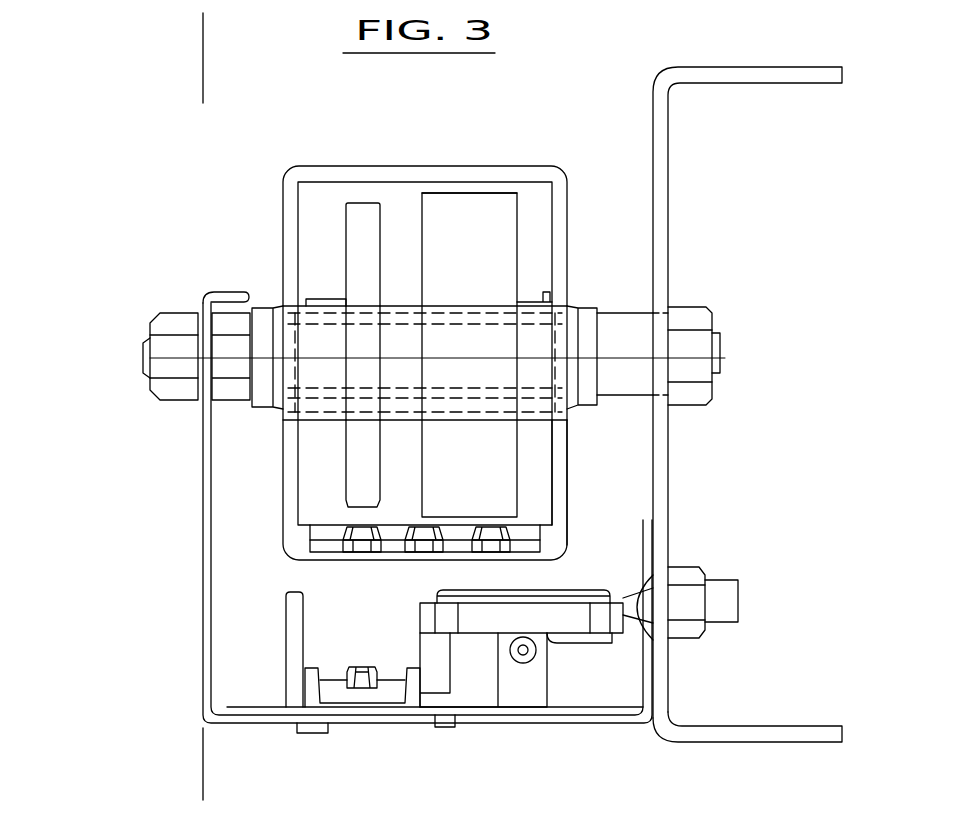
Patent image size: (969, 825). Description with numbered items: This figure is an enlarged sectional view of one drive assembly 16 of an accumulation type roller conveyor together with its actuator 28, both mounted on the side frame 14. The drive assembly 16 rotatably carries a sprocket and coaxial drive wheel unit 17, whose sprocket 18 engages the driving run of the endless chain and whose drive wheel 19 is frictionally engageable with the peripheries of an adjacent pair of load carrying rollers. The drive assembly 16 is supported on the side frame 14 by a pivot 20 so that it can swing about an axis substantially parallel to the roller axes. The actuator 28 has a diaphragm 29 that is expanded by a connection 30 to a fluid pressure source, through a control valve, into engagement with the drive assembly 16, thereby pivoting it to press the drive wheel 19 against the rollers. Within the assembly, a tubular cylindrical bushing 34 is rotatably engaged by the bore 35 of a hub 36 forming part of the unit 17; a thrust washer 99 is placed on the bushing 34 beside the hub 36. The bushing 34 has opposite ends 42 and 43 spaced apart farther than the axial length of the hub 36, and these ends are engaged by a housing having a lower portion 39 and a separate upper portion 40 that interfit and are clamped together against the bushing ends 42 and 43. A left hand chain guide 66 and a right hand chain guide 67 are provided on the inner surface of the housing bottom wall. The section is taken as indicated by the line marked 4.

The section line 4- 4 is at (198, 42).
The side frame 14 is at (668, 166).
The drive assembly 16 is at (300, 165).
The sprocket and coaxial drive wheel unit 17 is at (447, 205).
The sprocket 18 is at (346, 228).
The drive wheel 19 is at (490, 205).
The pivot 20 is at (712, 352).
The actuator 28 is at (420, 614).
The diaphragm 29 is at (623, 598).
The connection 30 is at (523, 663).
The tubular cylindrical bushing 34 is at (207, 292).
The bore 35 is at (340, 412).
The hub 36 is at (320, 300).
The lower portion 39 is at (565, 480).
The upper portion 40 is at (568, 280).
The end 42 is at (275, 403).
The end 43 is at (607, 330).
The left hand chain guide 66 is at (540, 535).
The right hand chain guide 67 is at (310, 533).
The thrust washer 99 is at (548, 290).